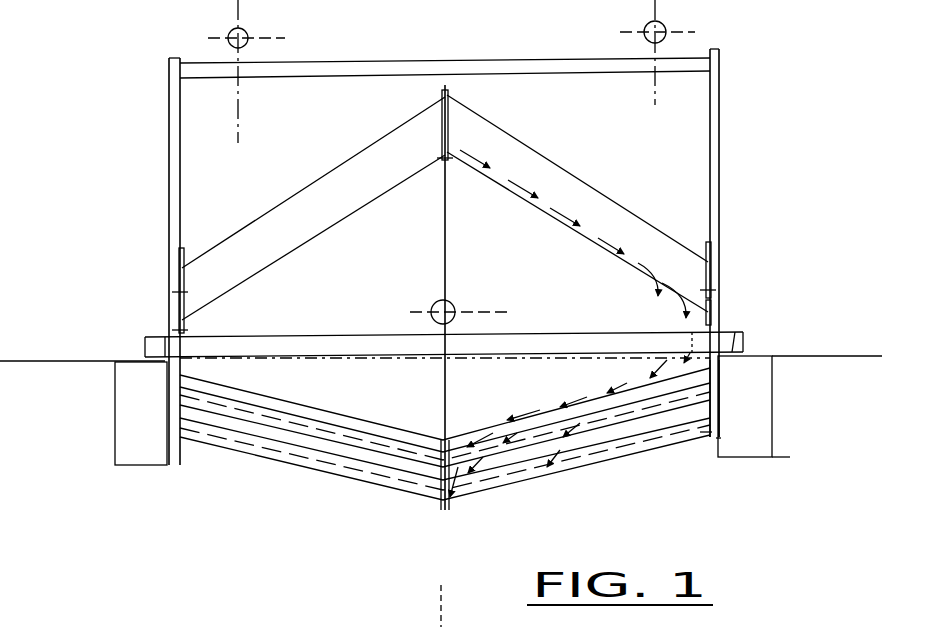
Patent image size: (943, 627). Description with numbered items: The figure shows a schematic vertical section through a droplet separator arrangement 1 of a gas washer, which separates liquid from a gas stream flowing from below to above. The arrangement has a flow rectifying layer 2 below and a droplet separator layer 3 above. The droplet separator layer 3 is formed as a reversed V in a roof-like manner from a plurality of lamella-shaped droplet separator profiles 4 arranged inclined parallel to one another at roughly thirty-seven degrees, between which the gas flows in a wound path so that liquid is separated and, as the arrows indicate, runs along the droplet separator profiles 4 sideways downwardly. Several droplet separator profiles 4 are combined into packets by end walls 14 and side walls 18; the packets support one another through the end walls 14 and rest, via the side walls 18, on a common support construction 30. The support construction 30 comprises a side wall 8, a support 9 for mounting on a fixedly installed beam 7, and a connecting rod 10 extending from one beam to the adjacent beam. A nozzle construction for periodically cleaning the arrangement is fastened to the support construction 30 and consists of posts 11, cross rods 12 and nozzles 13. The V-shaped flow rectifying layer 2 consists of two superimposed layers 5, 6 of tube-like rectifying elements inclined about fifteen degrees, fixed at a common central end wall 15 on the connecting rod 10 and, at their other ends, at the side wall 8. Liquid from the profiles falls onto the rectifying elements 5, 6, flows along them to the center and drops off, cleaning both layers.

The droplet separator arrangement 1 is at (718, 290).
The flow rectifying layer 2 is at (340, 458).
The droplet separator layer 3 is at (540, 165).
The droplet separator profiles 4 is at (592, 232).
The flow rectifying elements (upper layer) 5 is at (300, 410).
The flow rectifying elements (lower layer) 6 is at (295, 447).
The fixedly installed beam 7 is at (135, 415).
The side wall 8 is at (700, 432).
The support 9 is at (145, 345).
The connecting rod 10 is at (300, 338).
The posts 11 is at (715, 108).
The cross rods 12 is at (485, 65).
The nozzles 13 is at (249, 42).
The end walls 14 is at (442, 152).
The central end wall 15 is at (448, 428).
The side walls 18 is at (707, 247).
The support construction 30 is at (715, 368).